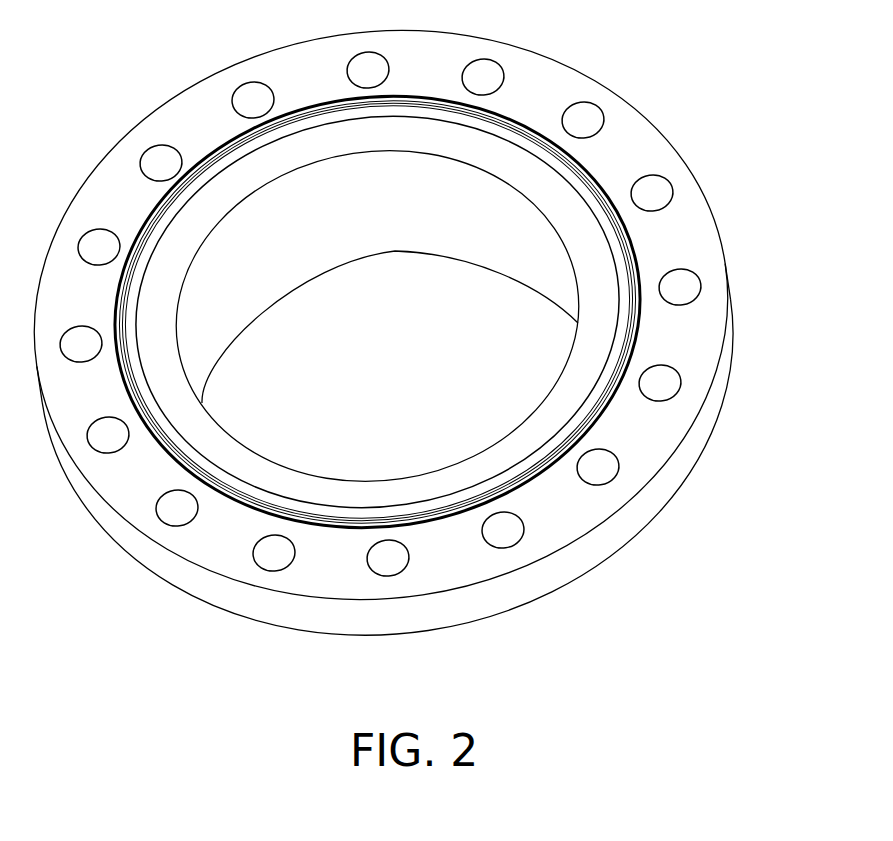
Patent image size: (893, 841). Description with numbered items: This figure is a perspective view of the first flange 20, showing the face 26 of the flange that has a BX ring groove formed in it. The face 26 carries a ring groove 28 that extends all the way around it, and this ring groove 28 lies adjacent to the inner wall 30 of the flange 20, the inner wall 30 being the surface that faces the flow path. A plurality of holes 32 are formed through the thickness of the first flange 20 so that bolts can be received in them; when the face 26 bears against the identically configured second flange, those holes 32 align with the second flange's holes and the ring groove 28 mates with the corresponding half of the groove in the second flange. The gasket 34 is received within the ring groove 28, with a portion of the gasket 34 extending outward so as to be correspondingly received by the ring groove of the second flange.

The first flange 20 is at (395, 341).
The face 26 is at (640, 133).
The ring groove 28 is at (517, 117).
The inner wall 30 is at (321, 223).
The holes 32 is at (155, 152).
The gasket 34 is at (538, 465).